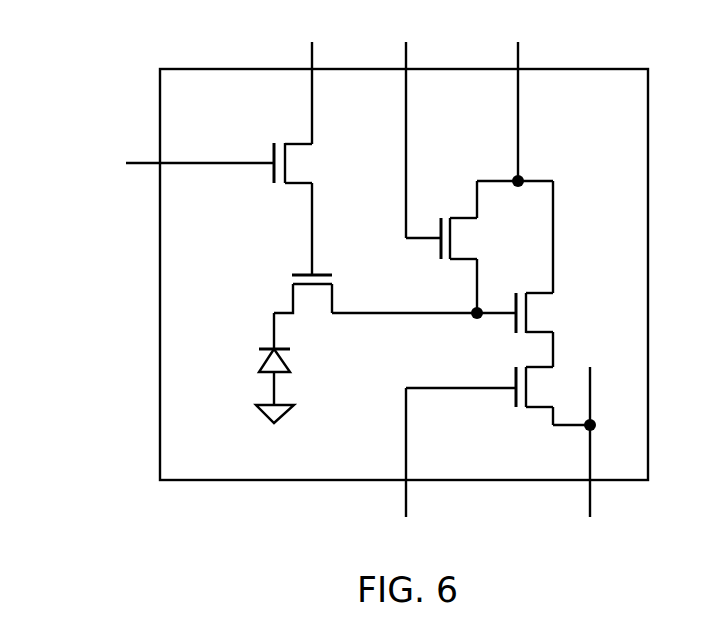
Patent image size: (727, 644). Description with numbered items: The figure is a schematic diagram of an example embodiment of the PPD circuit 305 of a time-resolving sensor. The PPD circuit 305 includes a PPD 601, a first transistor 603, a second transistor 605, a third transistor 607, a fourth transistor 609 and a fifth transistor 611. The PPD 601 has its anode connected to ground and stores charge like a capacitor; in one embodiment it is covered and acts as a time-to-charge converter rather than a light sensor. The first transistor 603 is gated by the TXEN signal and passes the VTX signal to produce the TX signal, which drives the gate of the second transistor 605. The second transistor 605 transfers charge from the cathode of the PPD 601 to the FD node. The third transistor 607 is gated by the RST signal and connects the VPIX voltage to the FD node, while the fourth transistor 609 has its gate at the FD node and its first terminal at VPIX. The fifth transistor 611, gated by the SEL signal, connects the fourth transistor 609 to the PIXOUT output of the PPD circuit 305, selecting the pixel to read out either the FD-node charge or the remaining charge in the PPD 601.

The PPD circuit 305 is at (203, 480).
The PPD 601 is at (293, 386).
The first transistor 603 is at (300, 163).
The second transistor 605 is at (297, 281).
The third transistor 607 is at (466, 238).
The fourth transistor 609 is at (543, 313).
The fifth transistor 611 is at (542, 387).